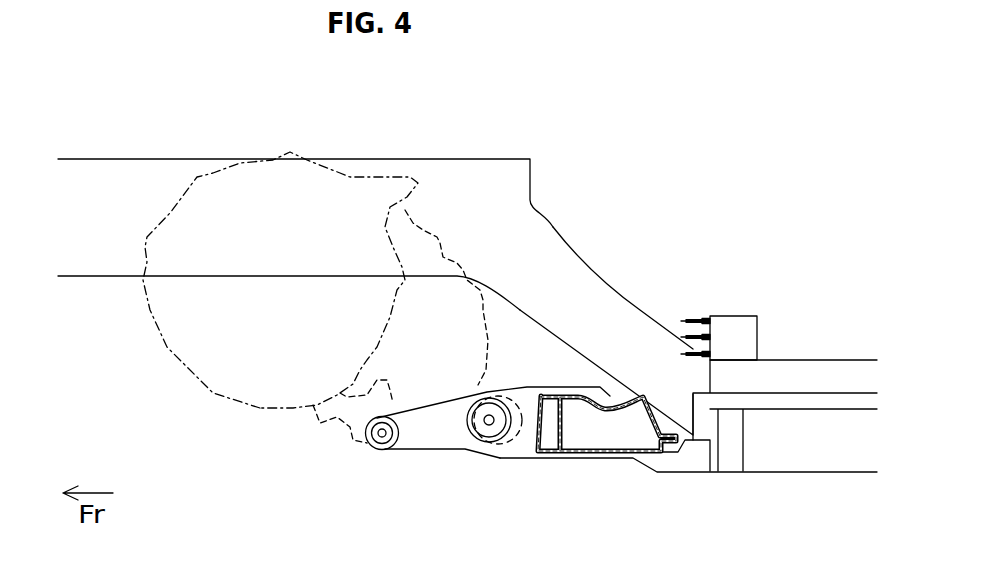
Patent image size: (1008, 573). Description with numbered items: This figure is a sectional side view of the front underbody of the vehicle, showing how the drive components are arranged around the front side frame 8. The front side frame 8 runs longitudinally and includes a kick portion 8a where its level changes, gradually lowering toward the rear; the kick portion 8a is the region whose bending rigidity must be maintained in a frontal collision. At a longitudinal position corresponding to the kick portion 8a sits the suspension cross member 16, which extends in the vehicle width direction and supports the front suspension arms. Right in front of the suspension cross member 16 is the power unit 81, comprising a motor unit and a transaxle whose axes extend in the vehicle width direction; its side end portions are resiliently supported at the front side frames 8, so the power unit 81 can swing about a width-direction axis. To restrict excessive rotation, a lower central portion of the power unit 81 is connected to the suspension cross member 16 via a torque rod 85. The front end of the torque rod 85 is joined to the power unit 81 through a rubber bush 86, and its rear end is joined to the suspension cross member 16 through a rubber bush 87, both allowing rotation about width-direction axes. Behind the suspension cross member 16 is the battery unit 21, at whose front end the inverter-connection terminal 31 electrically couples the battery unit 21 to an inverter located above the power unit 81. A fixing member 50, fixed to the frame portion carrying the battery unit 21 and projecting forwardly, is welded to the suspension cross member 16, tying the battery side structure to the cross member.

The front side frame 8 is at (478, 157).
The kick portion 8a is at (604, 282).
The inverter-connection terminal 31 is at (699, 316).
The battery unit 21 is at (833, 352).
The fixing member 50 is at (681, 472).
The suspension cross member 16 is at (588, 460).
The torque rod 85 is at (420, 443).
The rubber bush 86 is at (377, 450).
The rubber bush 87 is at (474, 453).
The power unit 81 is at (265, 410).